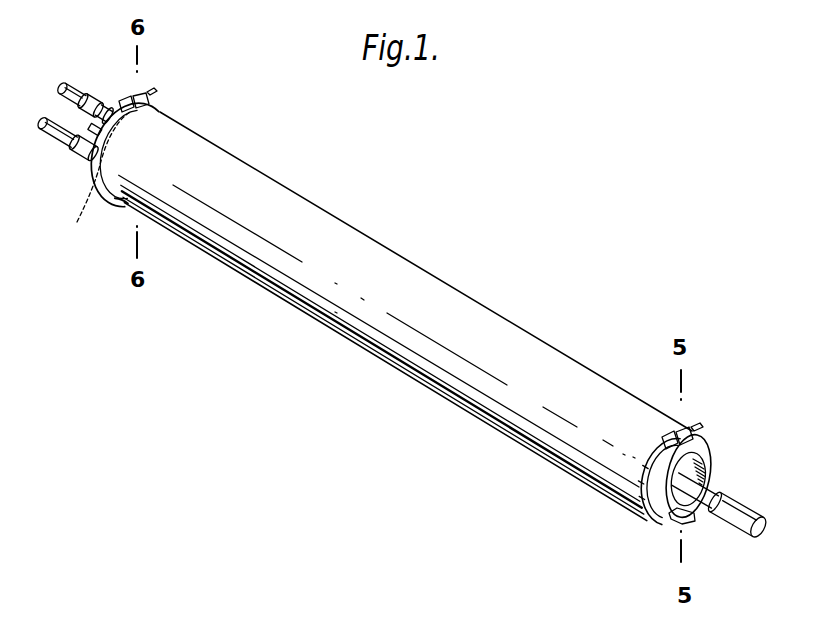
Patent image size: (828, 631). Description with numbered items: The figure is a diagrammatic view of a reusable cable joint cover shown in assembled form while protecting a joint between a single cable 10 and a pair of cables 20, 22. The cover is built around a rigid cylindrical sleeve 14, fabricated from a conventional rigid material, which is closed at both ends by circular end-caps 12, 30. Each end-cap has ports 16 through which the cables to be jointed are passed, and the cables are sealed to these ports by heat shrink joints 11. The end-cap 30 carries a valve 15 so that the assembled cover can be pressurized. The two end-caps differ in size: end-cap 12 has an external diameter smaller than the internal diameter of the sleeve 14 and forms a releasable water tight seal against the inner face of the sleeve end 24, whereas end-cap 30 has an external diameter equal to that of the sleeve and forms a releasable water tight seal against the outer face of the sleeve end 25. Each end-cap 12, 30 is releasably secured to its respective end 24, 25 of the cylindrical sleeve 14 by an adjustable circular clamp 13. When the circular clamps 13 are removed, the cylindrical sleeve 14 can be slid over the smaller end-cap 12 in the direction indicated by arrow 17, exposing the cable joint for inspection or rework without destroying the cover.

The single cable 10 is at (747, 535).
The heat shrink joint 11 is at (86, 93).
The end-cap 12 is at (672, 518).
The adjustable circular clamp 13 is at (167, 112).
The cylindrical sleeve 14 is at (372, 334).
The valve 15 is at (98, 114).
The port 16 is at (111, 100).
The arrow 17 is at (455, 237).
The cable 20 is at (67, 80).
The cable 22 is at (54, 142).
The end of cylindrical sleeve 24 is at (598, 473).
The end of cylindrical sleeve 25 is at (178, 142).
The end-cap 30 is at (95, 176).